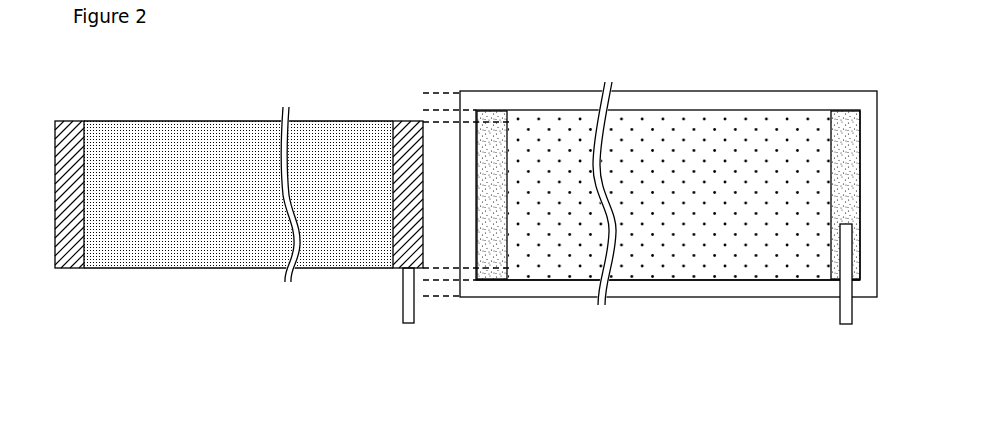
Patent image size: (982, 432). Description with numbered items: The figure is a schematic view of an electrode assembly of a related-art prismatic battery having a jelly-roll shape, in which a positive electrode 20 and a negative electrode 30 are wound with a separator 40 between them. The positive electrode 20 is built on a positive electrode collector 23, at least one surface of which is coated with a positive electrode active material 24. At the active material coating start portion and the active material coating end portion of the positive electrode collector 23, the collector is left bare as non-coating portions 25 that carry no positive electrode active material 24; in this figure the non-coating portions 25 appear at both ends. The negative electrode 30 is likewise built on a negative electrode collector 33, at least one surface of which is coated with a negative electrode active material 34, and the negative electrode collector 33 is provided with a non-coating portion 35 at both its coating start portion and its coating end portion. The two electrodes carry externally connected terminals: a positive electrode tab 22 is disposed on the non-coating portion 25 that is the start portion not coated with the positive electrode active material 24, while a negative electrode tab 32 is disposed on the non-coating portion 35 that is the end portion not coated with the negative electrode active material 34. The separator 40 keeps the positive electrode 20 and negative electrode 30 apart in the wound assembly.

The positive electrode 20 is at (239, 217).
The positive electrode tab 22 is at (408, 325).
The positive electrode collector 23 is at (323, 268).
The positive electrode active material 24 is at (240, 252).
The non-coating portion 25 is at (66, 120).
The negative electrode 30 is at (679, 211).
The negative electrode tab 32 is at (848, 326).
The negative electrode collector 33 is at (493, 280).
The negative electrode active material 34 is at (522, 132).
The non-coating portion 35 is at (490, 115).
The separator 40 is at (707, 100).